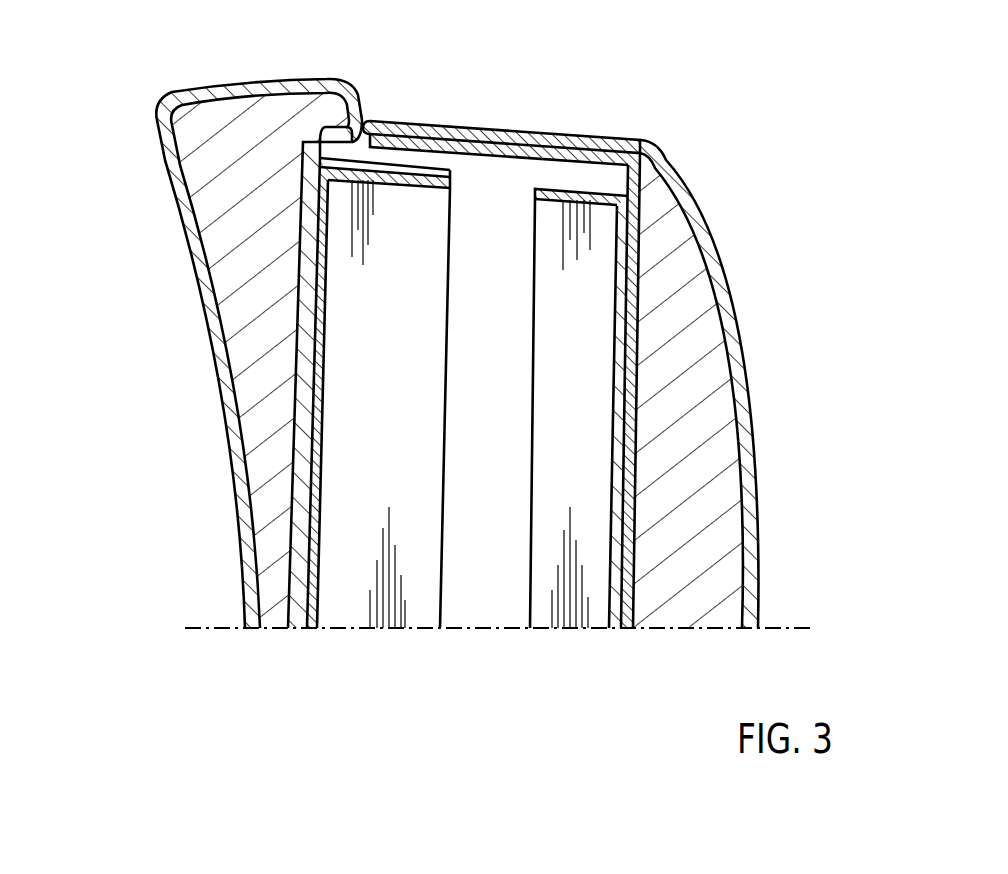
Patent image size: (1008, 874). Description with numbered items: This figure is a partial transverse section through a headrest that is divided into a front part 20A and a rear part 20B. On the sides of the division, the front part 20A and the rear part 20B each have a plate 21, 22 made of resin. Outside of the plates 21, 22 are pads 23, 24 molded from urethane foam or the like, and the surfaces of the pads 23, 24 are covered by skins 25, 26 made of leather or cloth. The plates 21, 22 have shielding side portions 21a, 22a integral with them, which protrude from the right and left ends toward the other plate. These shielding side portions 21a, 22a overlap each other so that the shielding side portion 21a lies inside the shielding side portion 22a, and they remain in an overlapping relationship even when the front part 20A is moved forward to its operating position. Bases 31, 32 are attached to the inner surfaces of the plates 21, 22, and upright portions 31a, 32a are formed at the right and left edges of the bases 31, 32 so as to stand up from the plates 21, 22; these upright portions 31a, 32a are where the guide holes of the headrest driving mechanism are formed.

The front part 20A is at (128, 216).
The rear part 20B is at (745, 226).
The plate 21 is at (395, 339).
The shielding side portion 21a is at (480, 163).
The plate 22 is at (590, 332).
The shielding side portion 22a is at (542, 155).
The pad 23 is at (235, 307).
The pad 24 is at (690, 365).
The skin 25 is at (192, 264).
The skin 26 is at (723, 293).
The base 31 is at (318, 336).
The upright portion 31a is at (368, 178).
The base 32 is at (672, 346).
The upright portion 32a is at (597, 197).